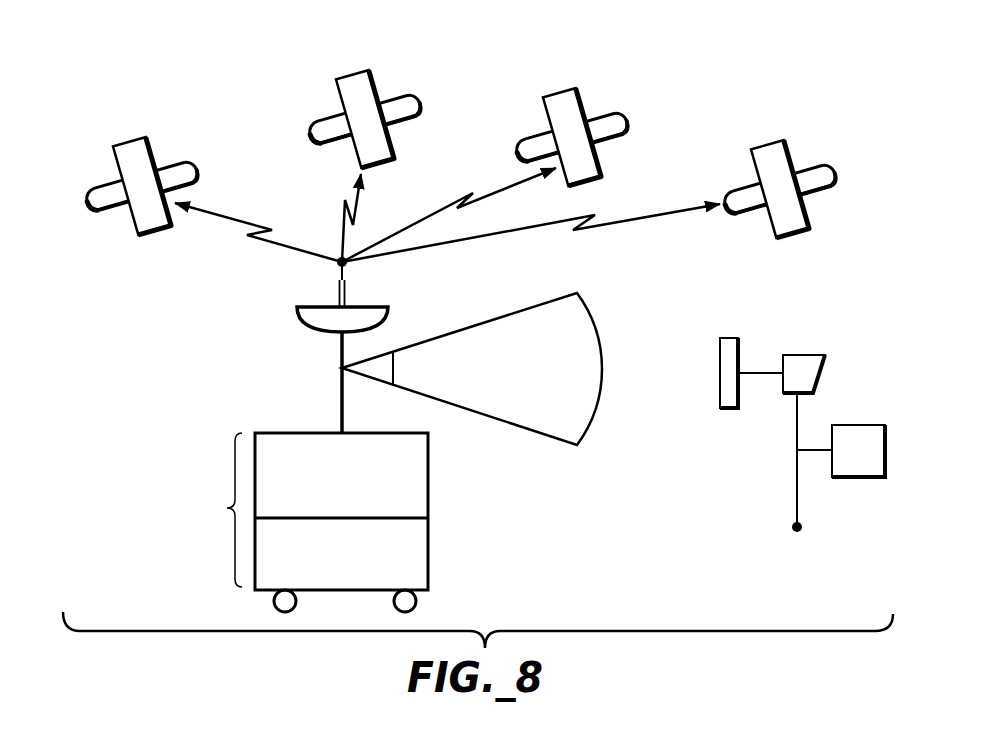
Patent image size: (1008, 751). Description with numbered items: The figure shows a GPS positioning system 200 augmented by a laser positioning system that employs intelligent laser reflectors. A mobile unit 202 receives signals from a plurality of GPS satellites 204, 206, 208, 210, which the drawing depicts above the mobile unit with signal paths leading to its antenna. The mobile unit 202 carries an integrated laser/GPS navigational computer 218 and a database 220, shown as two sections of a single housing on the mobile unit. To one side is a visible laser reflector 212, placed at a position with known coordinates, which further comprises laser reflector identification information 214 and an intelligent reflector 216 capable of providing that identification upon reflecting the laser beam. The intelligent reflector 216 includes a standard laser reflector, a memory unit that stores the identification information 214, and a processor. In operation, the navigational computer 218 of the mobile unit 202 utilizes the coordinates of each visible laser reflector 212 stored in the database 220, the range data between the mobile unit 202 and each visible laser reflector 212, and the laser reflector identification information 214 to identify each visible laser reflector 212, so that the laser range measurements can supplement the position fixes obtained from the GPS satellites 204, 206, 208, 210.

The navigation system 200 is at (160, 564).
The mobile unit 202 is at (328, 522).
The GPS satellite 204 is at (150, 152).
The GPS satellite 206 is at (372, 82).
The GPS satellite 208 is at (580, 100).
The GPS satellite 210 is at (787, 152).
The visible laser reflector 212 is at (824, 411).
The laser reflector identification information (ID) 214 is at (855, 425).
The intelligent reflector (IR) 216 is at (728, 338).
The integrated laser/GPS navigational computer 218 is at (420, 490).
The database 220 is at (420, 555).